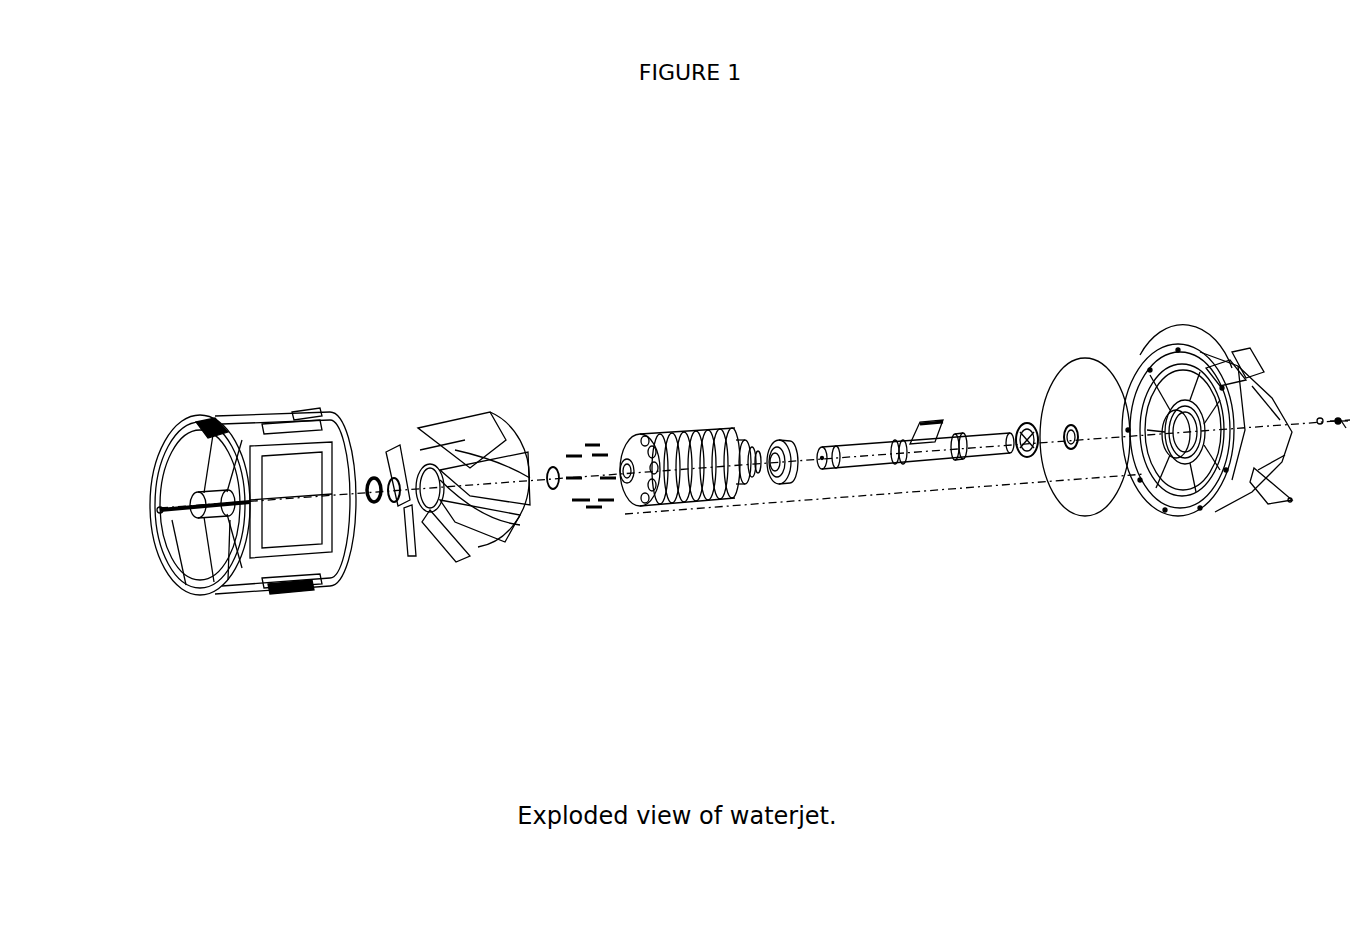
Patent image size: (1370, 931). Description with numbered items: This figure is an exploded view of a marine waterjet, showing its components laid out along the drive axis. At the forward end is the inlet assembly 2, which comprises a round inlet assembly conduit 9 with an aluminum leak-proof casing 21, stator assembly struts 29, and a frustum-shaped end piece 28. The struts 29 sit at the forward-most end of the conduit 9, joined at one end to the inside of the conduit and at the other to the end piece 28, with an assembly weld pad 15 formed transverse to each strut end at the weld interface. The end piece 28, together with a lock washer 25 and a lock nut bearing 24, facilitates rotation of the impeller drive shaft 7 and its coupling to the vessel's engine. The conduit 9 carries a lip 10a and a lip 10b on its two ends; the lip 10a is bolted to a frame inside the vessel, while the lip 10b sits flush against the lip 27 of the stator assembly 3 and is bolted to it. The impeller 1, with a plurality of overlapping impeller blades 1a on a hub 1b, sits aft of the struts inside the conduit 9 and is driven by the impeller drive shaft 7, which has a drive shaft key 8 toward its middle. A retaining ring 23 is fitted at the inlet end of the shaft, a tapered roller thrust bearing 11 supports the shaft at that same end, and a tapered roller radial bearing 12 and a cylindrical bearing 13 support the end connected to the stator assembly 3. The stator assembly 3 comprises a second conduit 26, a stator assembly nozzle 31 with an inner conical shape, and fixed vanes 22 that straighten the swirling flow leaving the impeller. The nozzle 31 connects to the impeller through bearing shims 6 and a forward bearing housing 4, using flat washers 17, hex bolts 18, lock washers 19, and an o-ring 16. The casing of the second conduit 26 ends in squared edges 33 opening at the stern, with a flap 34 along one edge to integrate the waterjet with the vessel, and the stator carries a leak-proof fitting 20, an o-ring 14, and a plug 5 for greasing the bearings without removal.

The impeller 1 is at (458, 425).
The impeller blades 1a is at (463, 522).
The hub 1b is at (430, 466).
The inlet assembly 2 is at (243, 420).
The stator assembly 3 is at (1220, 366).
The forward bearing housing 4 is at (633, 432).
The plug 5 is at (1342, 428).
The bearing shims 6 is at (696, 428).
The impeller drive shaft 7 is at (858, 443).
The drive shaft key 8 is at (919, 418).
The inlet assembly conduit 9 is at (182, 538).
The lip 10a is at (208, 422).
The lip 10b is at (312, 410).
The tapered roller thrust bearing 11 is at (785, 438).
The tapered roller radial bearing 12 is at (1026, 424).
The cylindrical bearing 13 is at (1070, 422).
The o-ring 14 is at (1331, 418).
The assembly weld pad 15 is at (176, 512).
The o-ring 16 is at (1093, 518).
The flat washers 17 is at (608, 506).
The hex bolts 18 is at (584, 510).
The lock washers 19 is at (598, 510).
The leak-proof fitting 20 is at (283, 584).
The leak-proof casing 21 is at (277, 440).
The fixed vanes 22 is at (1142, 418).
The retaining ring 23 is at (551, 466).
The lock nut bearing 24 is at (373, 476).
The lock washer 25 is at (395, 476).
The second conduit 26 is at (1240, 452).
The lip 27 is at (1163, 347).
The end piece 28 is at (218, 492).
The stator assembly struts 29 is at (222, 542).
The stator assembly nozzle 31 is at (1172, 472).
The squared edges 33 is at (1242, 354).
The flap 34 is at (1274, 504).